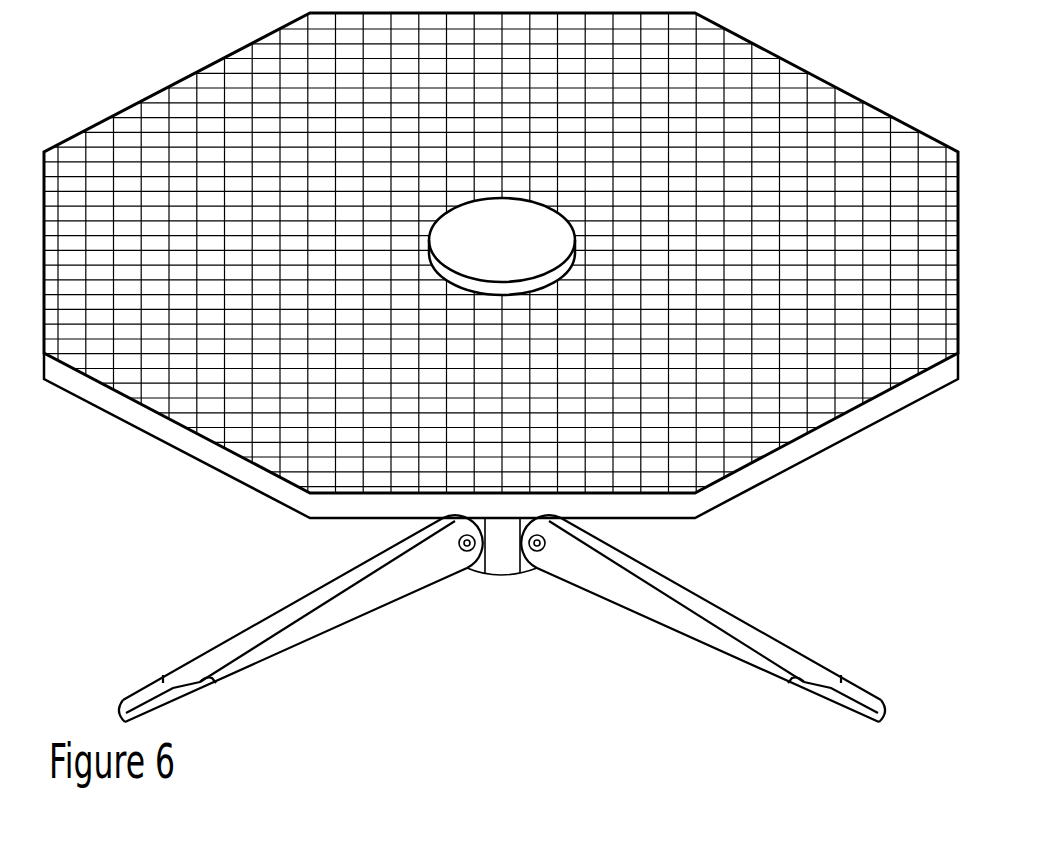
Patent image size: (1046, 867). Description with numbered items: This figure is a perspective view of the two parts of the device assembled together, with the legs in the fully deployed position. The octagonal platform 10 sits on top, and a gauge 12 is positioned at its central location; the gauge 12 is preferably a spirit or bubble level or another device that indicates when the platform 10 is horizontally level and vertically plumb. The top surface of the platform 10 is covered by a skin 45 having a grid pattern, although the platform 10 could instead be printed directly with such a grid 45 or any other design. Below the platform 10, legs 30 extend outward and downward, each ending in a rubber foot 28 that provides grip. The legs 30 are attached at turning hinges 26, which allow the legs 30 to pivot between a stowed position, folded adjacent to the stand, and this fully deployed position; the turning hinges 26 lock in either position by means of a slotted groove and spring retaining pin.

The platform 10 is at (848, 113).
The gauge 12 is at (508, 260).
The turning hinge 26 is at (535, 550).
The rubber foot 28 is at (182, 692).
The leg 30 is at (285, 613).
The skin 45 is at (225, 88).